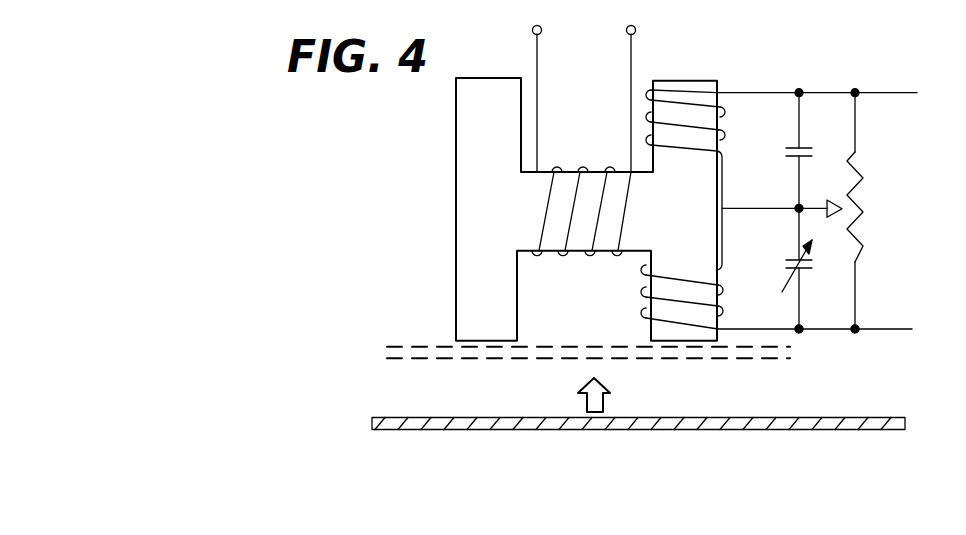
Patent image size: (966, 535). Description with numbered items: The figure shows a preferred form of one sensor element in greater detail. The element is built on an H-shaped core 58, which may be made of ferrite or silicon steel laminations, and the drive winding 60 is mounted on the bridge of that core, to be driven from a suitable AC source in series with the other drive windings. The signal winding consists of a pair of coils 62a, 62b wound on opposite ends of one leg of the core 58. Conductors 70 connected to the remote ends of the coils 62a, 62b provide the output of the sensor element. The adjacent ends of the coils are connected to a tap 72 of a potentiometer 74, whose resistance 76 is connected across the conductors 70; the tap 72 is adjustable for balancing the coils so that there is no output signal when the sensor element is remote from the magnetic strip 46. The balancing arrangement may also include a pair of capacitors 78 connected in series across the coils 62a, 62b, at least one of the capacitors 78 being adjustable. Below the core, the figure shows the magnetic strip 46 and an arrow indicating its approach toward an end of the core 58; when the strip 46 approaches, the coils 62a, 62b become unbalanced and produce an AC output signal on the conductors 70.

The magnetic strip 46 is at (788, 423).
The H-shaped core 58 is at (462, 184).
The drive winding 60 is at (579, 167).
The coil 62a is at (710, 102).
The coil 62b is at (706, 329).
The conductors 70 is at (887, 93).
The tap 72 is at (826, 197).
The potentiometer 74 is at (864, 182).
The resistance 76 is at (867, 245).
The capacitors 78 is at (788, 152).